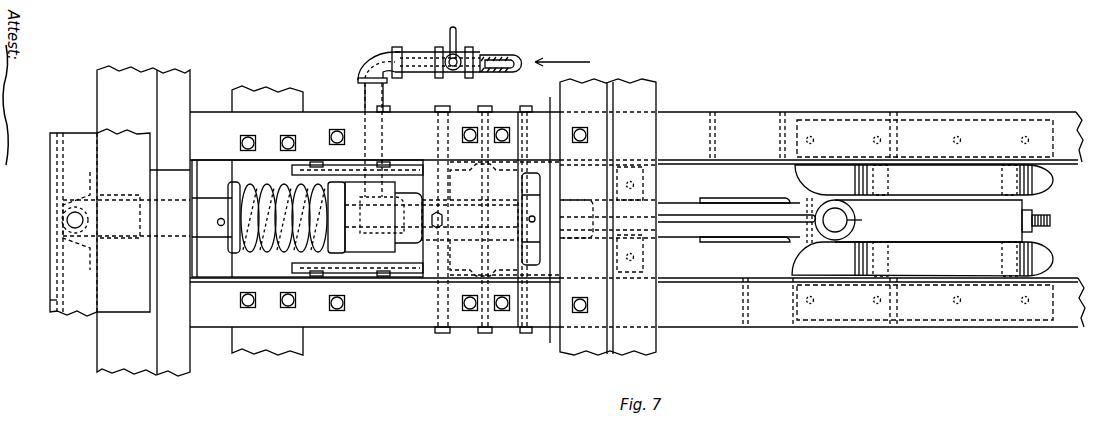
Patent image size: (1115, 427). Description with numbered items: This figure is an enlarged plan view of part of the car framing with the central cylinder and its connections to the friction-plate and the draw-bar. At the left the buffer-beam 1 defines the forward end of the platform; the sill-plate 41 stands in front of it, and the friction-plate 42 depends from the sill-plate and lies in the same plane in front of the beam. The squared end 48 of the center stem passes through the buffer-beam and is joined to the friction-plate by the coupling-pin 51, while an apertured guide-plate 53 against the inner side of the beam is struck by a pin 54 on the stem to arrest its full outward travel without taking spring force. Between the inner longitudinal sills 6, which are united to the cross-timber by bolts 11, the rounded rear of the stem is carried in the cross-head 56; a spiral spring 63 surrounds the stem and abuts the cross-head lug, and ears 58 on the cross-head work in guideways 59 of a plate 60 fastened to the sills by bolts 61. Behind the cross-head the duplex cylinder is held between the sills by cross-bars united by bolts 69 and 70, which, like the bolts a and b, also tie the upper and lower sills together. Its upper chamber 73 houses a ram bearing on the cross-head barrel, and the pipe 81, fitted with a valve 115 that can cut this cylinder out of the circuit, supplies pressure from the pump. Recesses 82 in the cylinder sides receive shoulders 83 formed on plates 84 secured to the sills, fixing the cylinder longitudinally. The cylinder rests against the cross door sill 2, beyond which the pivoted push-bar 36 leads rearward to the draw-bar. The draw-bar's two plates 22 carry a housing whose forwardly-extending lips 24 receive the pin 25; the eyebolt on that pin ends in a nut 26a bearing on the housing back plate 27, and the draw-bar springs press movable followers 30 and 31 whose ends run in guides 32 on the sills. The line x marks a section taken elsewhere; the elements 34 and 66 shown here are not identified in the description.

The buffer-beam 1 is at (143, 221).
The cross door sill 2 is at (609, 217).
The inner longitudinal sill 6 is at (330, 135).
The bolts 11 is at (284, 137).
The draw-bar plates 22 is at (740, 238).
The forwardly-extending lips 24 is at (844, 263).
The pin 25 is at (918, 221).
The nut 26a is at (1076, 262).
The back plate 27 is at (1024, 221).
The movable follower 30 is at (1010, 262).
The movable follower 31 is at (880, 262).
The guides 32 is at (943, 220).
The block 34 is at (846, 166).
The pivoted push-bar 36 is at (684, 207).
The sill-plate 41 is at (120, 222).
The friction-plate 42 is at (50, 300).
The squared end of side stem 48 is at (210, 208).
The coupling-pin 51 is at (66, 218).
The apertured guide-plate 53 is at (192, 178).
The pin 54 is at (219, 228).
The cross-head 56 is at (424, 219).
The ears 58 is at (365, 170).
The guideways 59 is at (300, 266).
The plate 60 is at (330, 166).
The bolts 61 is at (392, 110).
The spiral spring 63 is at (246, 252).
The plate 66 is at (522, 330).
The bolt 69 is at (480, 132).
The bolt 70 is at (505, 308).
The cylindrical chamber 73 is at (565, 224).
The pipe 81 is at (356, 97).
The recess 82 is at (516, 170).
The shoulder 83 is at (474, 168).
The plate 84 is at (538, 160).
The valve 115 is at (450, 50).
The bolt a is at (329, 303).
The bolt b is at (580, 231).
The section line x is at (60, 228).